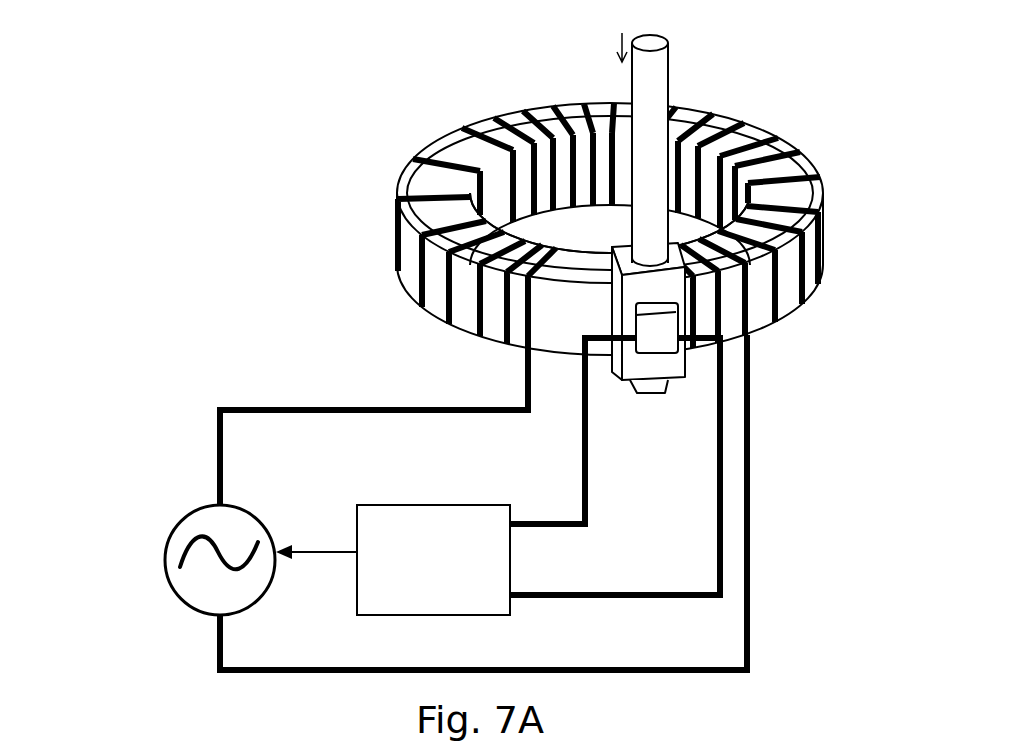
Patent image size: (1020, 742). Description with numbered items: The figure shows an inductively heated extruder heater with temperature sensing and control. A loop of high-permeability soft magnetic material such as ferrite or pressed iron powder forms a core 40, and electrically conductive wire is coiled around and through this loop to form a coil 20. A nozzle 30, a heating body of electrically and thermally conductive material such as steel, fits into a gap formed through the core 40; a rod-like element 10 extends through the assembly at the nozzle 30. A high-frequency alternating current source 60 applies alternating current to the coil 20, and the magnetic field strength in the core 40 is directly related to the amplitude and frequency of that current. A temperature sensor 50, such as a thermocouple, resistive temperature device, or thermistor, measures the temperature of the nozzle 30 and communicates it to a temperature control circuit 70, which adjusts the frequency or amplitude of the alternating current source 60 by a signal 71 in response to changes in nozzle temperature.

The rod / workpiece 10 is at (665, 42).
The coil 20 is at (463, 123).
The nozzle 30 is at (680, 283).
The core 40 is at (430, 173).
The temperature sensor 50 is at (667, 337).
The alternating current source 60 is at (152, 535).
The temperature control circuit 70 is at (360, 488).
The signal 71 is at (317, 542).